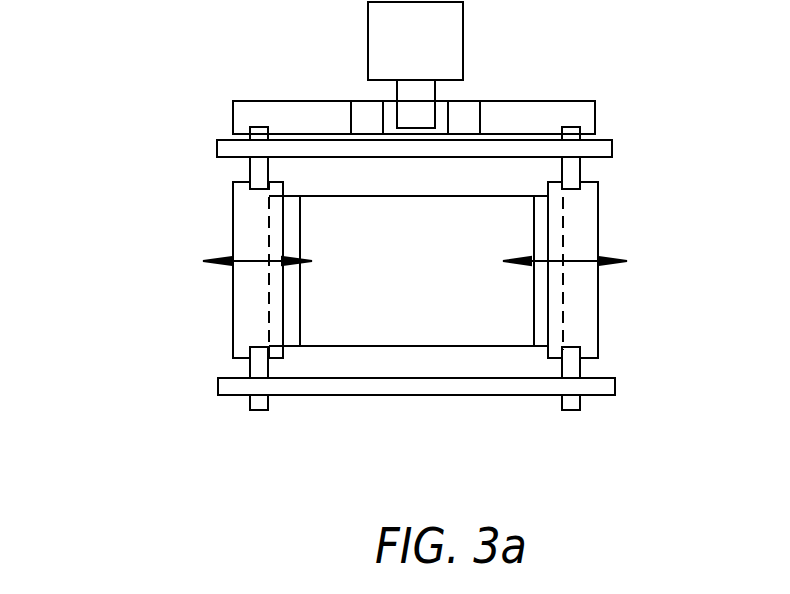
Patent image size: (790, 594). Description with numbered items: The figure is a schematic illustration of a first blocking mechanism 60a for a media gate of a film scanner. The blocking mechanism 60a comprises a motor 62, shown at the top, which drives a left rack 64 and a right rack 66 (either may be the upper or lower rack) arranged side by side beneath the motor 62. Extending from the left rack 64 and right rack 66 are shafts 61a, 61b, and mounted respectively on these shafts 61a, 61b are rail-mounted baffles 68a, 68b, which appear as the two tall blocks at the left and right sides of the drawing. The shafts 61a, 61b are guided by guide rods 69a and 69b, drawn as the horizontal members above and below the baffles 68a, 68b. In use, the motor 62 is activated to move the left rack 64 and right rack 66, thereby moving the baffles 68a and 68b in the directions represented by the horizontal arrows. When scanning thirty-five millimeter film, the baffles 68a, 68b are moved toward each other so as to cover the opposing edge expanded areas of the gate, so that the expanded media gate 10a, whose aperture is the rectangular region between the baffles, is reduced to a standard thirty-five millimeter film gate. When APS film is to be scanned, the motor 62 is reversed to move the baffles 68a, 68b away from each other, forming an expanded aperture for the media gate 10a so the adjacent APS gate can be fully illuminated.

The expanded 35 mm media gate 10a is at (455, 347).
The blocking mechanism 60a is at (162, 281).
The shaft 61a is at (250, 134).
The shaft 61b is at (582, 137).
The motor 62 is at (445, 48).
The left rack 64 is at (261, 101).
The right rack 66 is at (552, 101).
The baffle 68a is at (233, 311).
The baffle 68b is at (583, 237).
The guide rod 69a is at (603, 152).
The guide rod 69b is at (347, 387).